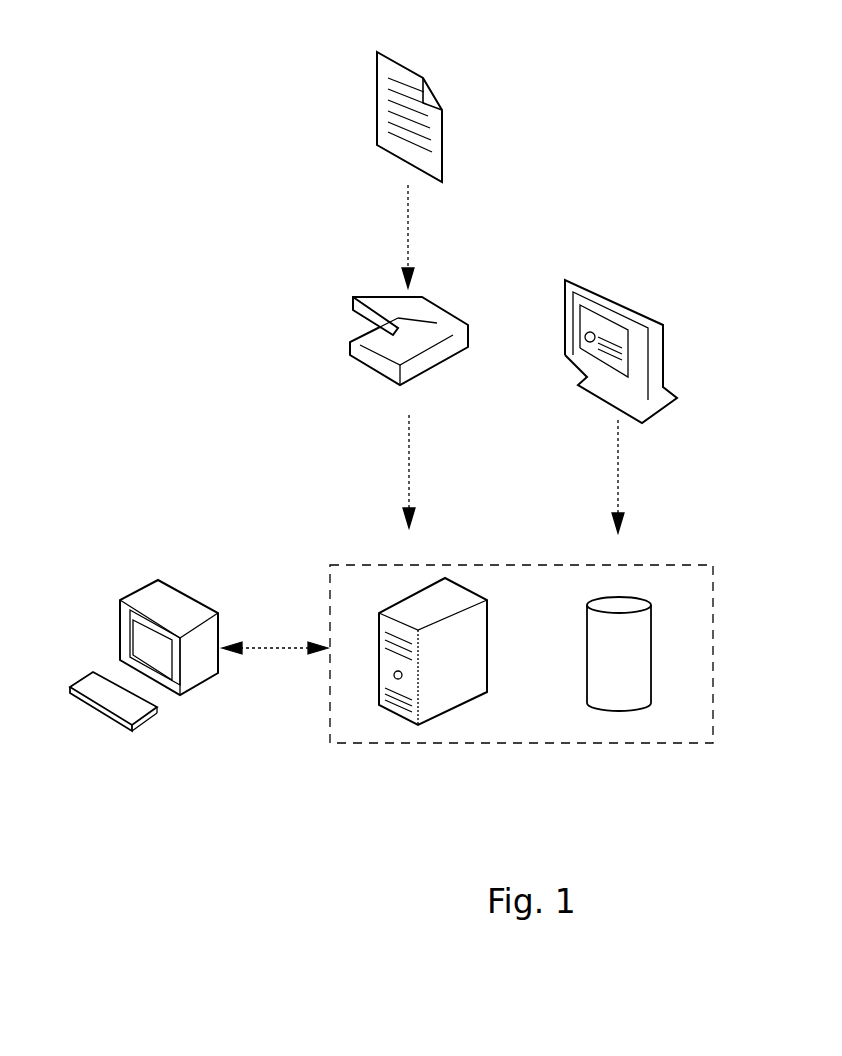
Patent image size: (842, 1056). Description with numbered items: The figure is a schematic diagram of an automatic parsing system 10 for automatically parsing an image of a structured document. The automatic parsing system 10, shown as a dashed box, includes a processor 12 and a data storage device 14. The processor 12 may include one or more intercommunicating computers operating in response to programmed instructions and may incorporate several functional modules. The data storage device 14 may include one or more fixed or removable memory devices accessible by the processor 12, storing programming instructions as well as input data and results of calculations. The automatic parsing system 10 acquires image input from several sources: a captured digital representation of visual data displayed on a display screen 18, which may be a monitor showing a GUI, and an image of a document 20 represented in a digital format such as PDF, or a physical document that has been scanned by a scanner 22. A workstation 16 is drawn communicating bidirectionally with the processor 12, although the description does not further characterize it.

The system 10 is at (367, 565).
The computer 12 is at (375, 688).
The database 14 is at (653, 657).
The workstation 16 is at (158, 580).
The display 18 is at (635, 305).
The document 20 is at (377, 90).
The scanner 22 is at (353, 297).